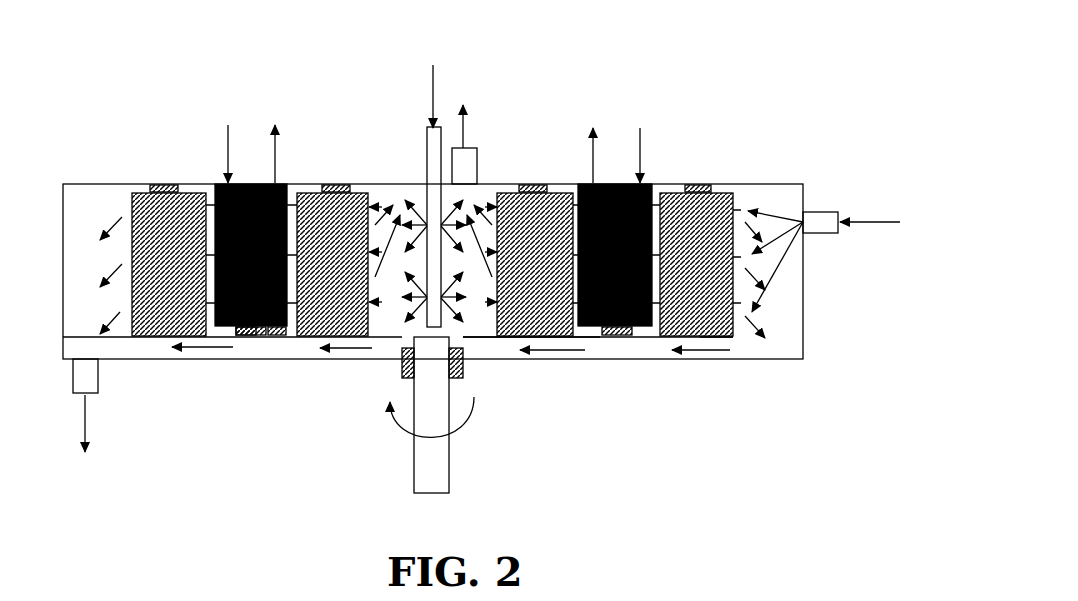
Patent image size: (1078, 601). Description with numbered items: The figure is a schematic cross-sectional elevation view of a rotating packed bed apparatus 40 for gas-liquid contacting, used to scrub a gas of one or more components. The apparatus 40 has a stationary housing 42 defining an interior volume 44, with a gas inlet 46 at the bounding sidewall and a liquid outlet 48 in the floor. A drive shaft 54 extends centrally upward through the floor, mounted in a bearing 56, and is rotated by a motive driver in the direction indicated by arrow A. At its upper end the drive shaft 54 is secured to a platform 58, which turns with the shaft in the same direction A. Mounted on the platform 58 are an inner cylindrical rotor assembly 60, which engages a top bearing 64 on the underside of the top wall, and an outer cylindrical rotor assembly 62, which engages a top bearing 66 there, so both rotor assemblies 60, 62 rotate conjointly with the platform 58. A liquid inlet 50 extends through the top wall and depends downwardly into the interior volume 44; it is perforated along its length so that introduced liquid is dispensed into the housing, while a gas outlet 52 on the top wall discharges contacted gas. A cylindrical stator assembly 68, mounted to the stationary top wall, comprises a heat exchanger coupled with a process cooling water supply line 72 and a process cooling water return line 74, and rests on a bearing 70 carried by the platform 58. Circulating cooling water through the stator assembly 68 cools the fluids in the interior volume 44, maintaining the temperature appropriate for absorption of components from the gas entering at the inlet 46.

The rotating packed bed apparatus 40 is at (683, 83).
The housing 42 is at (805, 318).
The interior volume 44 is at (783, 290).
The gas inlet 46 is at (828, 210).
The liquid outlet 48 is at (95, 375).
The liquid inlet 50 is at (428, 150).
The gas outlet 52 is at (467, 168).
The drive shaft 54 is at (440, 455).
The bearing 56 is at (405, 372).
The platform 58 is at (477, 337).
The inner cylindrical rotor assembly 60 is at (550, 337).
The outer cylindrical rotor assembly 62 is at (733, 340).
The top bearing 64 is at (525, 185).
The top bearing 66 is at (713, 191).
The cylindrical stator assembly 68 is at (280, 330).
The bearing 70 is at (257, 333).
The process cooling water supply (PCWS) line 72 is at (228, 150).
The process cooling water return (PCWR) line 74 is at (278, 152).
The direction of rotation A is at (398, 430).